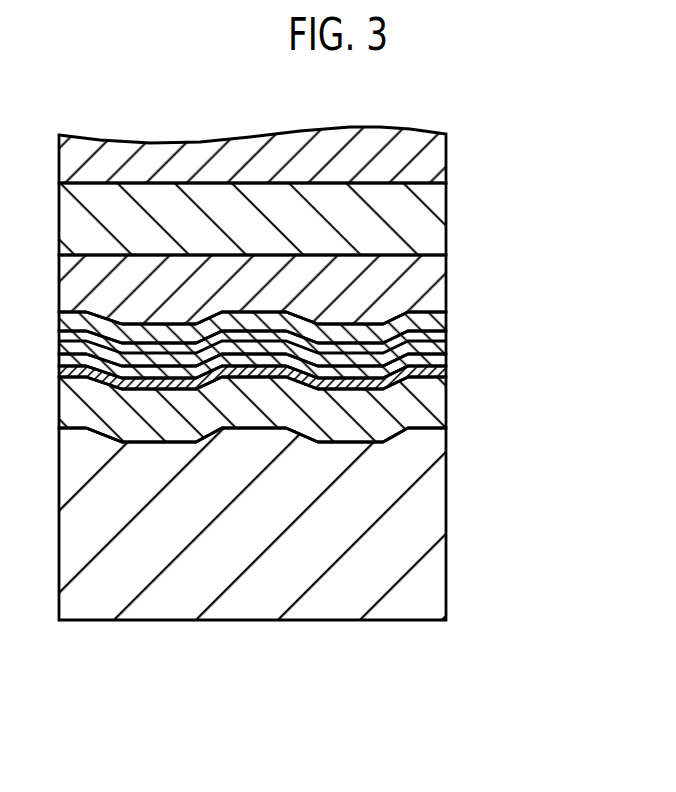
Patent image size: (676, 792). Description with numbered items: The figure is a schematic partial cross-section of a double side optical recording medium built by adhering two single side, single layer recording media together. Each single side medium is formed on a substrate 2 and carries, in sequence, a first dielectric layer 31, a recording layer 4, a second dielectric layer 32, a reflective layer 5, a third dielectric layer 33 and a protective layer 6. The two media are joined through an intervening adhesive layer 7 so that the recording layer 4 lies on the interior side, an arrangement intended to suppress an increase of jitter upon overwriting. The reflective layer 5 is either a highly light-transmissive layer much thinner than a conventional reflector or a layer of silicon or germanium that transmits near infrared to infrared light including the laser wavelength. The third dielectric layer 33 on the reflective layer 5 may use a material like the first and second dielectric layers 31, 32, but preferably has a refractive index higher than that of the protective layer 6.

The substrate 2 is at (446, 497).
The first dielectric layer 31 is at (446, 407).
The recording layer 4 is at (446, 370).
The second dielectric layer 32 is at (446, 355).
The reflective layer 5 is at (446, 333).
The third dielectric layer 33 is at (446, 317).
The protective layer 6 is at (446, 163).
The adhesive layer 7 is at (446, 230).